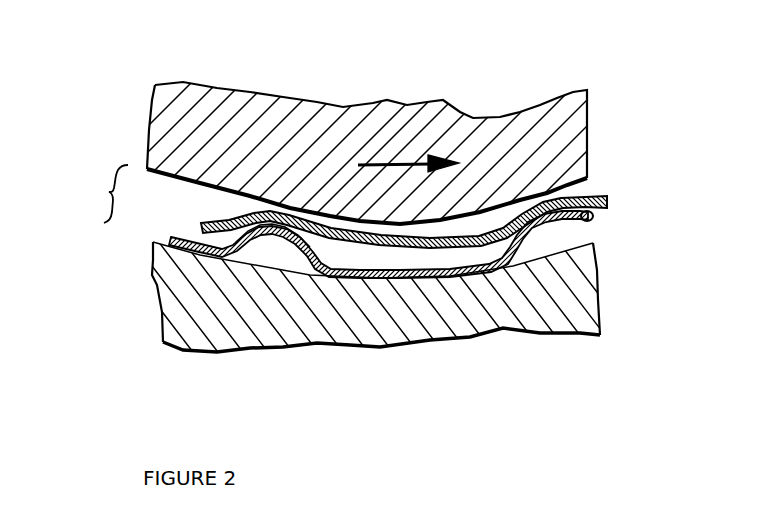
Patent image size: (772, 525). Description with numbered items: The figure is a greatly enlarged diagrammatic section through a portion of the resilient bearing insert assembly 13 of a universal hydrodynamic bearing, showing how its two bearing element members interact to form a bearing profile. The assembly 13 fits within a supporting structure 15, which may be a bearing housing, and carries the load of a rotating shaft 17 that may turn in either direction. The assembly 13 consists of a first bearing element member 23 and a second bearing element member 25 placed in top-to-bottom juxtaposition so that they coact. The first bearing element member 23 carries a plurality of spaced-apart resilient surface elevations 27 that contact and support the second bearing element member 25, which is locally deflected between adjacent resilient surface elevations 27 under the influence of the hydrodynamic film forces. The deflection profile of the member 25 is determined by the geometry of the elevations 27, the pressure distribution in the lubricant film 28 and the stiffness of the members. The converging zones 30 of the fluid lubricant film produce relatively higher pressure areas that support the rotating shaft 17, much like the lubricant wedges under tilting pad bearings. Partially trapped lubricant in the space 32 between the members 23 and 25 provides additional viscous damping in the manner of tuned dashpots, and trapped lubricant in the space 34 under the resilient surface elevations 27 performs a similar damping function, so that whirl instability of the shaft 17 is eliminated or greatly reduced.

The resilient bearing insert assembly 13 is at (96, 188).
The supporting structure 15 is at (193, 316).
The shaft 17 is at (245, 118).
The first bearing element member 23 is at (593, 219).
The second bearing element member 25 is at (608, 202).
The resilient surface elevations 27 is at (268, 232).
The lubricant film 28 is at (397, 232).
The converging zones 30 is at (487, 224).
The space 32 is at (372, 256).
The space 34 is at (270, 253).